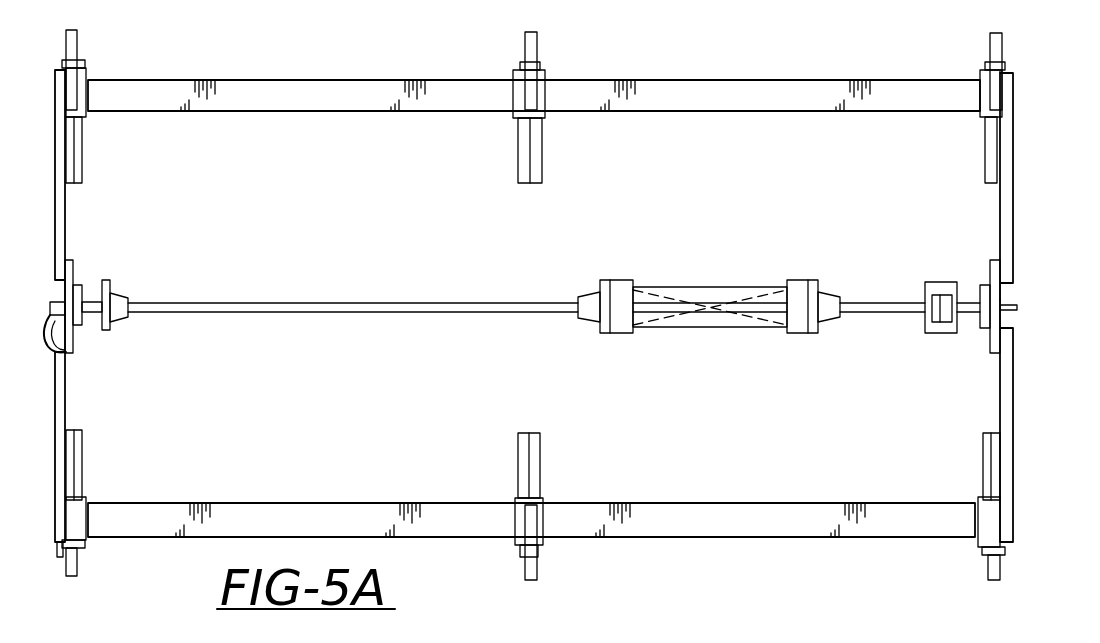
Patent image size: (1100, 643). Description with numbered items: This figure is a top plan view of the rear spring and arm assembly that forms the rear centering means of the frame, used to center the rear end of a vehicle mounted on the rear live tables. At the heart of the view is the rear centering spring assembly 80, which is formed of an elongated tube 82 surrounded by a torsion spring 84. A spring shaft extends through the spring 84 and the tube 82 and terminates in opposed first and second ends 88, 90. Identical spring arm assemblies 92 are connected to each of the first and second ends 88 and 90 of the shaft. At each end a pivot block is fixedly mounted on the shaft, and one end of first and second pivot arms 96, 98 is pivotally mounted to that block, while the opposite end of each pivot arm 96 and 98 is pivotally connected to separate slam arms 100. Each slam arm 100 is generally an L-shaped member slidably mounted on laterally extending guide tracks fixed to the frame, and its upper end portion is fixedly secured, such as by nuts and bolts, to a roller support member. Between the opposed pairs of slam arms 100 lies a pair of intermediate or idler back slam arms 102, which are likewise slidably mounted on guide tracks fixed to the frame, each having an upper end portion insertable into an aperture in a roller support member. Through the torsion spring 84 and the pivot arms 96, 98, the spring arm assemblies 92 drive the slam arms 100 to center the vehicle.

The rear centering spring assembly 80 is at (638, 69).
The elongated tube 82 is at (698, 328).
The torsion spring 84 is at (696, 306).
The first end 88 is at (1020, 308).
The second end 90 is at (68, 352).
The spring arm assembly 92 is at (572, 313).
The first pivot arm 96 is at (1000, 215).
The second pivot arm 98 is at (1000, 395).
The slam arm 100 is at (78, 93).
The intermediate back slam arm 102 is at (522, 95).